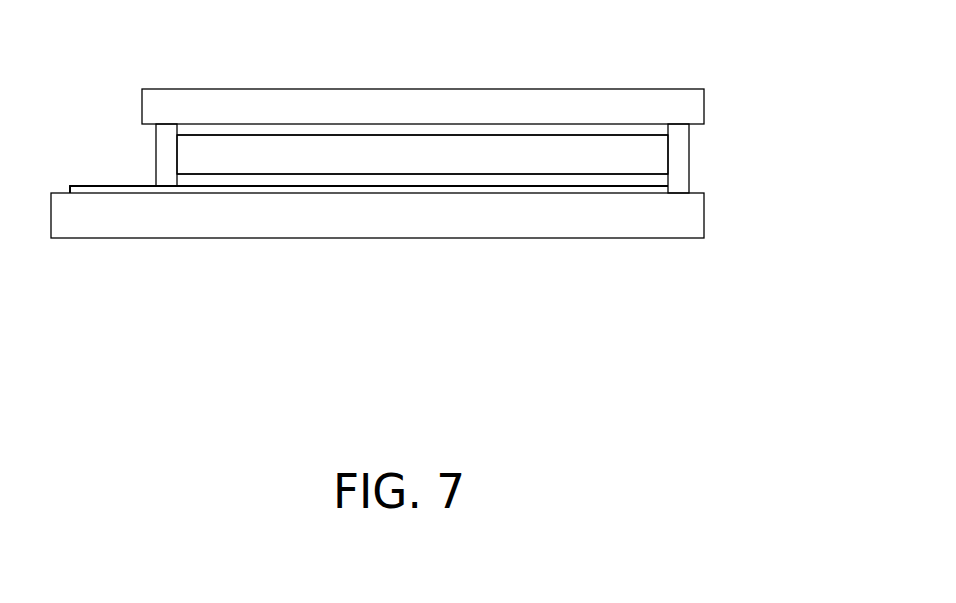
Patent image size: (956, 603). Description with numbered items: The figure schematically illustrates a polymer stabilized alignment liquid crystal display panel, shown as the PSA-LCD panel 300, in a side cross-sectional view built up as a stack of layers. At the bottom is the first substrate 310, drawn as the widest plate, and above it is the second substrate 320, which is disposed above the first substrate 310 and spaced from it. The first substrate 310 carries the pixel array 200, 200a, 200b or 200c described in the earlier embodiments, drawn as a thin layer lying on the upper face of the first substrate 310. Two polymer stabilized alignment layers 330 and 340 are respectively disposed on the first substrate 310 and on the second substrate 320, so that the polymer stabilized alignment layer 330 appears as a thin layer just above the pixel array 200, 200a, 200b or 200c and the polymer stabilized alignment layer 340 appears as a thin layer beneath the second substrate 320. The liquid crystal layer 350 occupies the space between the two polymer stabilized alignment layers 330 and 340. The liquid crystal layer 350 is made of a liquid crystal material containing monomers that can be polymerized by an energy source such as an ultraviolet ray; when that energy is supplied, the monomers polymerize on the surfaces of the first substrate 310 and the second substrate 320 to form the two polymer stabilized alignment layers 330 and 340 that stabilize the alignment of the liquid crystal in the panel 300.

The PSA-LCD panel 300 is at (760, 365).
The first substrate 310 is at (697, 215).
The second substrate 320 is at (697, 109).
The polymer stabilized alignment layer 330 is at (577, 182).
The polymer stabilized alignment layer 340 is at (402, 130).
The liquid crystal layer 350 is at (465, 158).
The pixel array 200 is at (273, 190).
The pixel array 200a is at (369, 189).
The pixel array 200b is at (369, 189).
The pixel array 200c is at (369, 189).